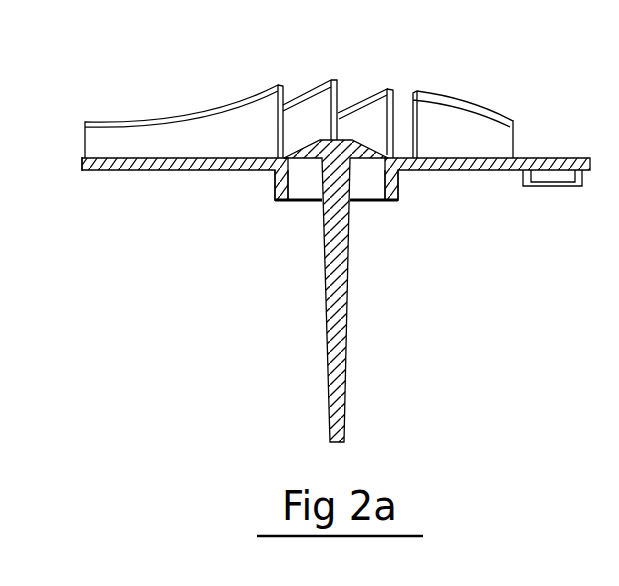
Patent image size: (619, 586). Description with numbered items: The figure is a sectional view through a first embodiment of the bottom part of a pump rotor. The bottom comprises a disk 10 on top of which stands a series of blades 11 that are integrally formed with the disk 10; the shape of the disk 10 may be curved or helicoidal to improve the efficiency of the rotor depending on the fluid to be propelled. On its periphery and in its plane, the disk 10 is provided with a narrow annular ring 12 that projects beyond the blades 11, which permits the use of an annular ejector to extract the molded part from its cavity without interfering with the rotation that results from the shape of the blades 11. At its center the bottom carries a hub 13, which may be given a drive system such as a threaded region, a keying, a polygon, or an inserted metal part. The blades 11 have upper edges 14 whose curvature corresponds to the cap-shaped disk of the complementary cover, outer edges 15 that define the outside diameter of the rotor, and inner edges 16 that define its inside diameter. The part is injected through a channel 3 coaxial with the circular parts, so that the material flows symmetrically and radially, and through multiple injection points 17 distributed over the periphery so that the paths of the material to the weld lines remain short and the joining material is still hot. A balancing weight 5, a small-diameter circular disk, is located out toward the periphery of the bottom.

The channel 3 is at (340, 340).
The balancing weight 5 is at (535, 187).
The disk 10 is at (130, 172).
The blades 11 is at (157, 128).
The narrow annular ring 12 is at (80, 169).
The hub 13 is at (400, 183).
The upper edges of the blades 14 is at (477, 110).
The outer edges of the blades 15 is at (515, 140).
The inner edges of the blades 16 is at (407, 110).
The injection points 17 is at (272, 199).